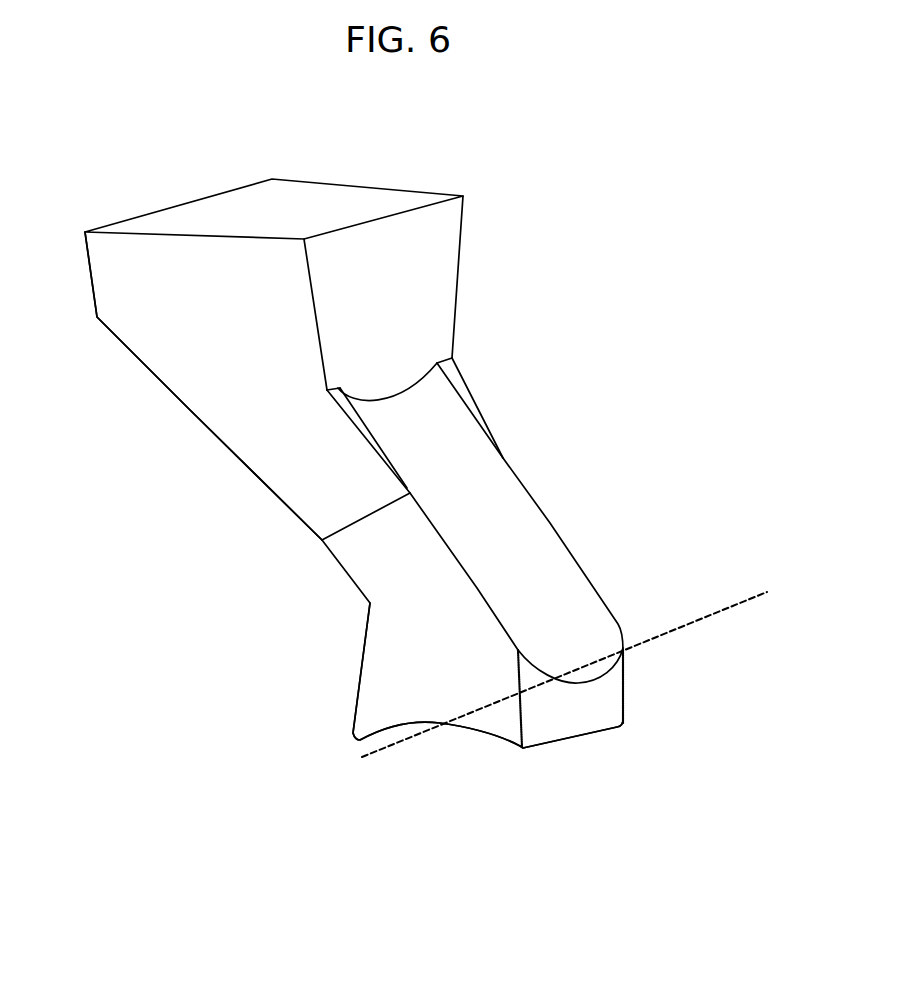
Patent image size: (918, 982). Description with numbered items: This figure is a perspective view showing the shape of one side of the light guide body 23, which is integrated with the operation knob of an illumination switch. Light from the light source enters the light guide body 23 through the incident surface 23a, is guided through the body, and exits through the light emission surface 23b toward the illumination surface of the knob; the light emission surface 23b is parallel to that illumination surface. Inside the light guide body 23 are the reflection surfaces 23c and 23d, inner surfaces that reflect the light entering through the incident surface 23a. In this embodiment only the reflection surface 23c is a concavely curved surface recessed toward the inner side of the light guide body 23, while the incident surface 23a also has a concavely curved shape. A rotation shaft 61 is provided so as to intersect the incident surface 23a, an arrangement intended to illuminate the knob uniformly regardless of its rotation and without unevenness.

The light guide body 23 is at (190, 605).
The incident surface 23a is at (552, 733).
The light emission surface 23b is at (343, 202).
The reflection surface 23c is at (507, 492).
The reflection surface 23d is at (188, 410).
The rotation shaft 61 is at (740, 590).